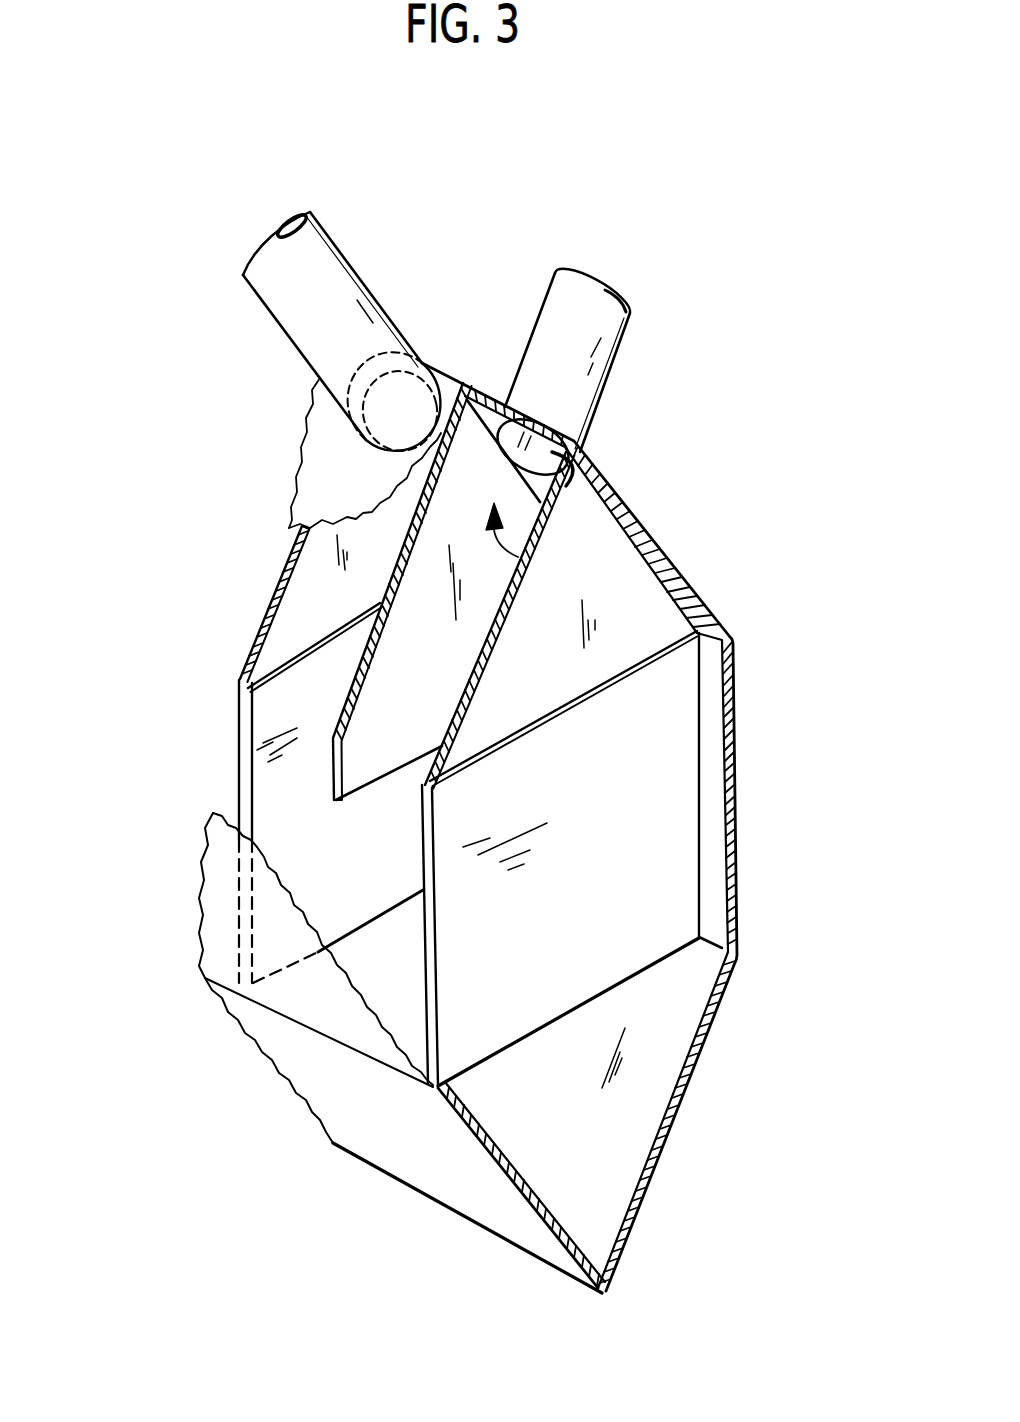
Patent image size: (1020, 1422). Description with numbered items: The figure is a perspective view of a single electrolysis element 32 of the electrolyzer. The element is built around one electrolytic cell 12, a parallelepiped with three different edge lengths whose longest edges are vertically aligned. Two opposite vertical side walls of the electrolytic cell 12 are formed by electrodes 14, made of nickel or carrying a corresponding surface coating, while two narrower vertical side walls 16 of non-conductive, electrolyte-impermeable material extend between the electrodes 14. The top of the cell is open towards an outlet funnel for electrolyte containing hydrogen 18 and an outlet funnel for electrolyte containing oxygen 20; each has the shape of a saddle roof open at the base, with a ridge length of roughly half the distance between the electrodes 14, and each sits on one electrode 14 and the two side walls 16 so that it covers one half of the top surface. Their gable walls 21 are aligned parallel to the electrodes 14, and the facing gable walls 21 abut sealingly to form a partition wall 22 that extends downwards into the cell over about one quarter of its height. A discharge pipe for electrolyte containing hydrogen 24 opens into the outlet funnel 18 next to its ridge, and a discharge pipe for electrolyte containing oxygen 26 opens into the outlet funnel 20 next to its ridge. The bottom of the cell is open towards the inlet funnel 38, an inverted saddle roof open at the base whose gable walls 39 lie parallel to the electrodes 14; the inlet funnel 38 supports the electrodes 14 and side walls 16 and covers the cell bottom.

The electrolytic cell 12 is at (258, 718).
The electrode 14 is at (630, 790).
The side wall 16 is at (224, 852).
The outlet funnel for electrolyte containing hydrogen 18 is at (365, 562).
The outlet funnel for electrolyte containing oxygen 20 is at (578, 549).
The gable wall 21 is at (313, 535).
The partition wall 22 is at (363, 740).
The discharge pipe for electrolyte containing hydrogen 24 is at (263, 307).
The discharge pipe for electrolyte containing oxygen 26 is at (585, 387).
The electrolysis element 32 is at (760, 887).
The inlet funnel 38 is at (587, 1197).
The gable wall of the inlet funnel 39 is at (660, 1048).